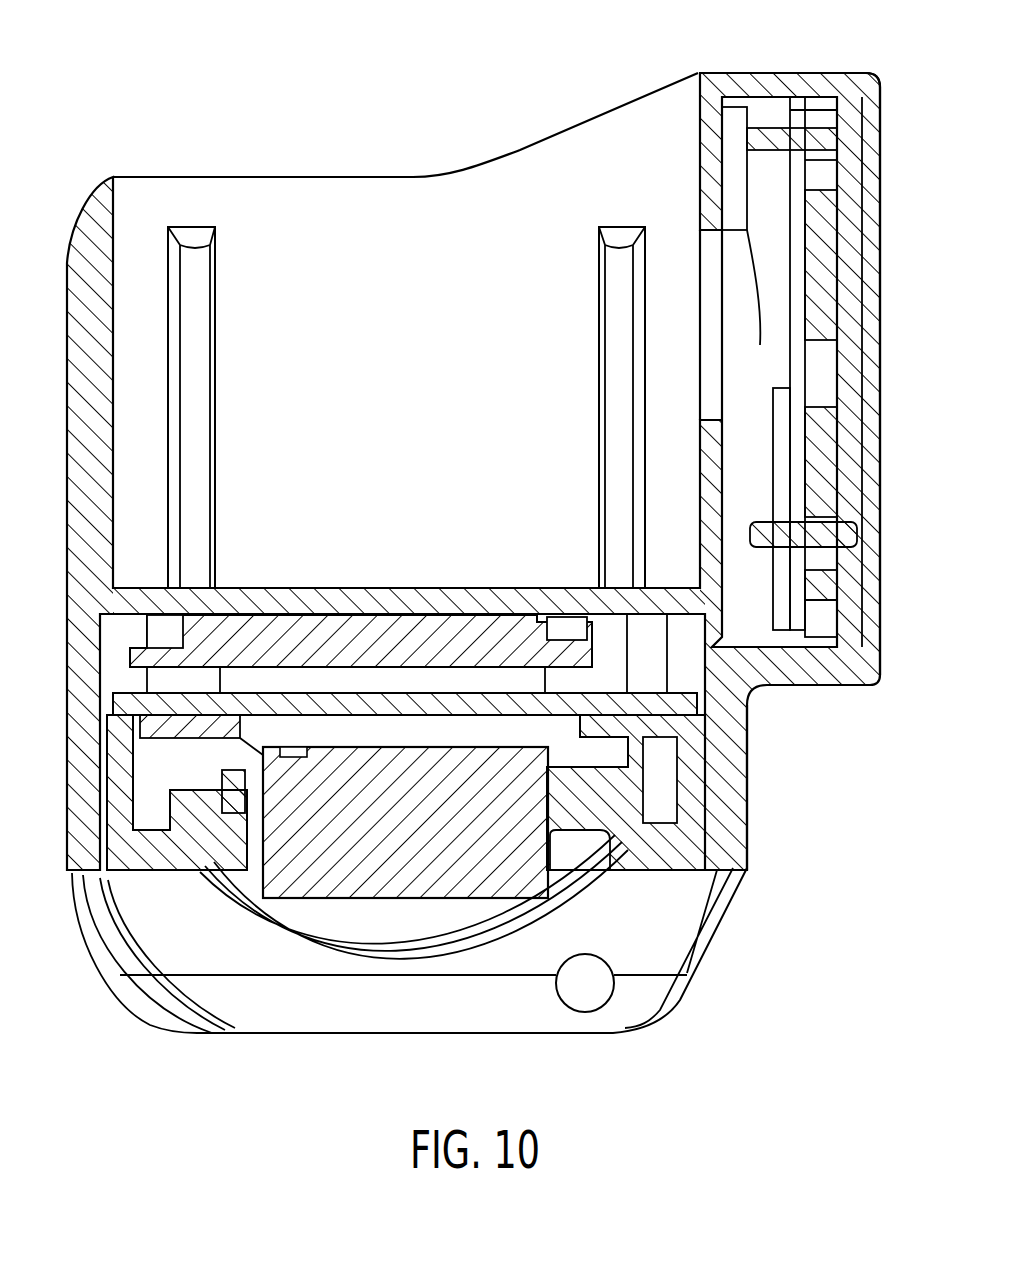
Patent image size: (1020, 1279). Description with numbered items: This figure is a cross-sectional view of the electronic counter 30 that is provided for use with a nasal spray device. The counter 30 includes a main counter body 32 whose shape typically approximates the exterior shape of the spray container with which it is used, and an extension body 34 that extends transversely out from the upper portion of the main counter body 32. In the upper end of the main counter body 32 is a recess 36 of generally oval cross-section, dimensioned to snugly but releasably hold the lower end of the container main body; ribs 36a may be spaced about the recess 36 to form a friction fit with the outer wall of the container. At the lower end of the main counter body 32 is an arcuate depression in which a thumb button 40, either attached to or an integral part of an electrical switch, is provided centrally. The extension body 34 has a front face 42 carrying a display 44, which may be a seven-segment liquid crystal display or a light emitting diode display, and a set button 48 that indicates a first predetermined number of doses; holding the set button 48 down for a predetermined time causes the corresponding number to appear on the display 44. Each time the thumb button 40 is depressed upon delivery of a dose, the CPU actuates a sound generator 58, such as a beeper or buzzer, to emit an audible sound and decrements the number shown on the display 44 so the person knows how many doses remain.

The electronic counter 30 is at (89, 168).
The main counter body 32 is at (53, 820).
The extension body 34 is at (750, 73).
The recess 36 is at (302, 178).
The ribs 36a is at (620, 265).
The thumb button 40 is at (305, 937).
The front face 42 is at (880, 113).
The display 44 is at (803, 238).
The set button 48 is at (880, 530).
The sound generator 58 is at (333, 625).